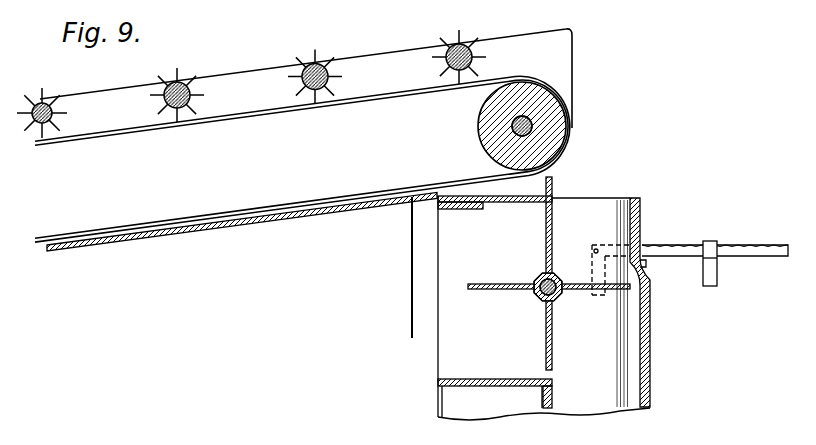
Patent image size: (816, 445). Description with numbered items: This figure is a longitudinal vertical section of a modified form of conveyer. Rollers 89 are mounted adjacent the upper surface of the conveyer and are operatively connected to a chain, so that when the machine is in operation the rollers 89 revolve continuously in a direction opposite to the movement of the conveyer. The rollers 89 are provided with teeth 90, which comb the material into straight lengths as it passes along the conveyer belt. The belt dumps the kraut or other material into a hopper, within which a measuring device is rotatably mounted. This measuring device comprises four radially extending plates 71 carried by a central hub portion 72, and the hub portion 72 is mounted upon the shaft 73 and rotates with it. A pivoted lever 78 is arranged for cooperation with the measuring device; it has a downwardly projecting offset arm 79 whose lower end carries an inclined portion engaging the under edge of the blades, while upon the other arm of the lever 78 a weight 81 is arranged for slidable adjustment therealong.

The radially extending plates 71 is at (555, 224).
The central hub portion 72 is at (556, 276).
The shaft 73 is at (543, 296).
The pivoted lever 78 is at (685, 251).
The downwardly projecting offset arm 79 is at (592, 296).
The weight 81 is at (712, 277).
The rollers 89 is at (322, 62).
The teeth 90 is at (184, 76).